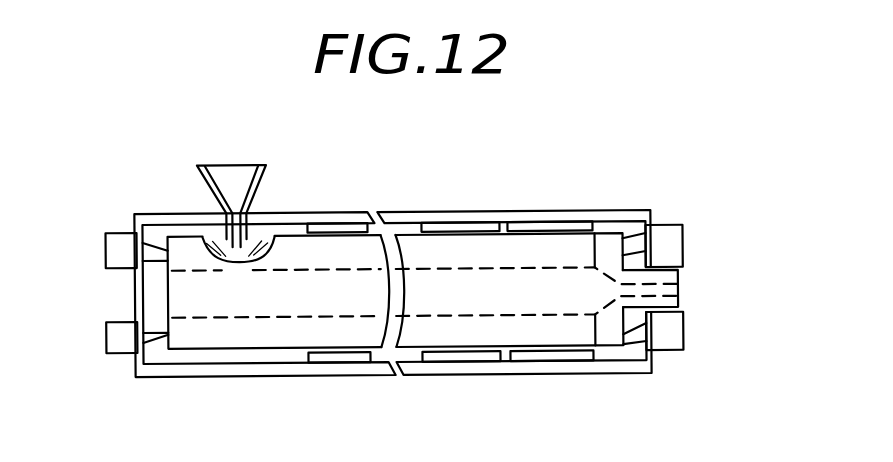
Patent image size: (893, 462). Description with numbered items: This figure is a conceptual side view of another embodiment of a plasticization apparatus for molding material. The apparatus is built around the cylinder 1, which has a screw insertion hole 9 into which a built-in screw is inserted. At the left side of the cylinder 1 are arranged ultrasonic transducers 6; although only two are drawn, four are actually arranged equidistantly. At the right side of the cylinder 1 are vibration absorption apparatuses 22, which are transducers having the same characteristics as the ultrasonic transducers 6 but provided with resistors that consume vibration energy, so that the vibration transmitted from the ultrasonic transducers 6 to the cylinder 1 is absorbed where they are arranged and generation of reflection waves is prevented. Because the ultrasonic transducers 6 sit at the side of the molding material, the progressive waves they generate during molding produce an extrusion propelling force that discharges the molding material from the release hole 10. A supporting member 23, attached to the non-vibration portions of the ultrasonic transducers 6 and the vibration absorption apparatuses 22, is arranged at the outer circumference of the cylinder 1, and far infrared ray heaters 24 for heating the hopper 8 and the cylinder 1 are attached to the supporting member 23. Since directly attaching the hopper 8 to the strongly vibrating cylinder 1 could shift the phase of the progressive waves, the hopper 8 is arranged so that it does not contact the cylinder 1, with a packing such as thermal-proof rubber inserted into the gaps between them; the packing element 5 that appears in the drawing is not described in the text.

The cylinder 1 is at (414, 244).
The seal member 5 is at (157, 328).
The ultrasonic transducer 6 is at (112, 341).
The hopper 8 is at (238, 183).
The screw insertion hole 9 is at (248, 302).
The release hole 10 is at (680, 292).
The vibration absorption apparatus 22 is at (678, 335).
The supporting member 23 is at (613, 371).
The far infrared ray heater 24 is at (523, 226).